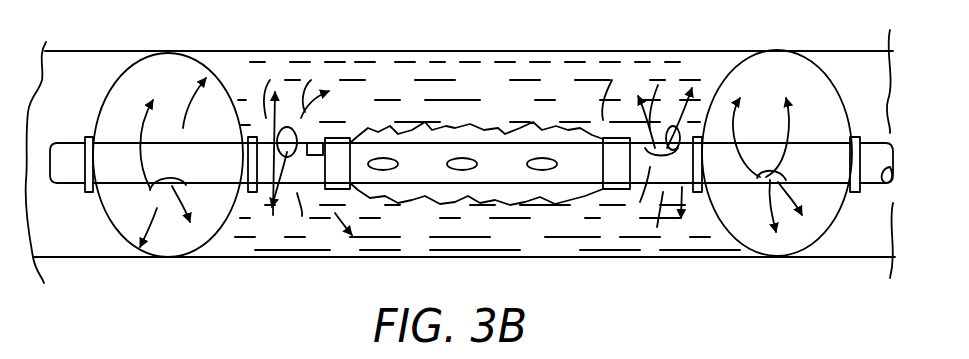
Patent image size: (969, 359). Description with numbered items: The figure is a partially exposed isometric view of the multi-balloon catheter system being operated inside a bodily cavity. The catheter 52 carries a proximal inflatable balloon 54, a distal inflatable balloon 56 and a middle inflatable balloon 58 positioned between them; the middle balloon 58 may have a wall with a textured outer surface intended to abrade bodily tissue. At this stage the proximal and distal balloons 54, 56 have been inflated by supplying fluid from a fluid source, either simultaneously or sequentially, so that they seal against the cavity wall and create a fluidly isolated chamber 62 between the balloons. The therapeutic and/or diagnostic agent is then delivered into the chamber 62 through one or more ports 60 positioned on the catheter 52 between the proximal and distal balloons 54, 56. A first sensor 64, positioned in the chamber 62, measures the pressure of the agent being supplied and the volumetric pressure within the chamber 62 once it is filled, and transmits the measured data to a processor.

The catheter 52 is at (660, 176).
The proximal inflatable balloon 54 is at (826, 72).
The distal inflatable balloon 56 is at (116, 78).
The middle inflatable balloon 58 is at (480, 137).
The port 60 is at (285, 190).
The fluidly isolated chamber 62 is at (472, 237).
The first sensor 64 is at (313, 157).